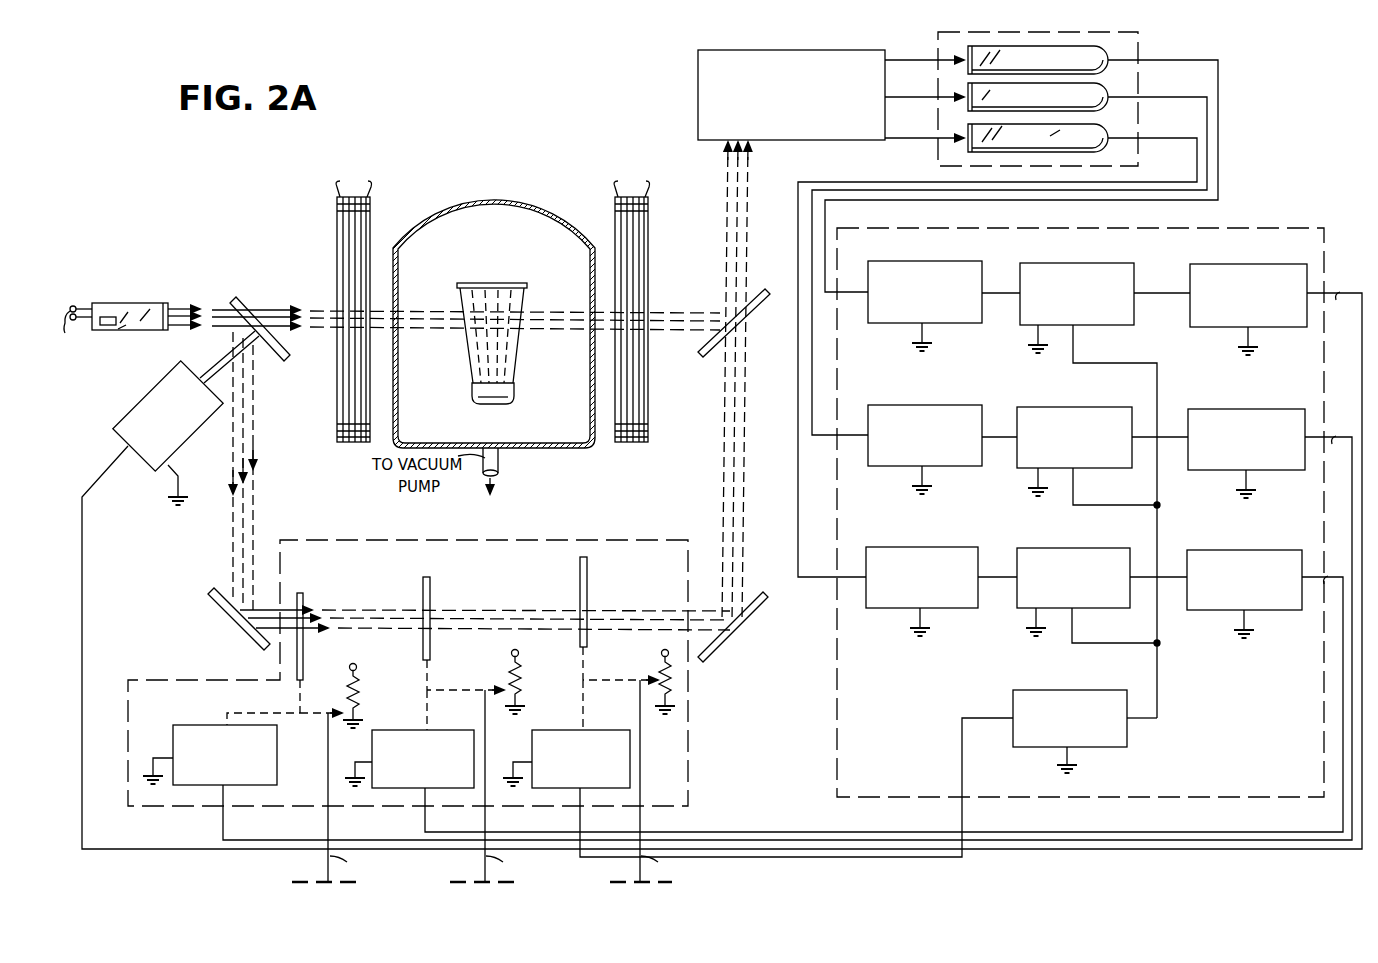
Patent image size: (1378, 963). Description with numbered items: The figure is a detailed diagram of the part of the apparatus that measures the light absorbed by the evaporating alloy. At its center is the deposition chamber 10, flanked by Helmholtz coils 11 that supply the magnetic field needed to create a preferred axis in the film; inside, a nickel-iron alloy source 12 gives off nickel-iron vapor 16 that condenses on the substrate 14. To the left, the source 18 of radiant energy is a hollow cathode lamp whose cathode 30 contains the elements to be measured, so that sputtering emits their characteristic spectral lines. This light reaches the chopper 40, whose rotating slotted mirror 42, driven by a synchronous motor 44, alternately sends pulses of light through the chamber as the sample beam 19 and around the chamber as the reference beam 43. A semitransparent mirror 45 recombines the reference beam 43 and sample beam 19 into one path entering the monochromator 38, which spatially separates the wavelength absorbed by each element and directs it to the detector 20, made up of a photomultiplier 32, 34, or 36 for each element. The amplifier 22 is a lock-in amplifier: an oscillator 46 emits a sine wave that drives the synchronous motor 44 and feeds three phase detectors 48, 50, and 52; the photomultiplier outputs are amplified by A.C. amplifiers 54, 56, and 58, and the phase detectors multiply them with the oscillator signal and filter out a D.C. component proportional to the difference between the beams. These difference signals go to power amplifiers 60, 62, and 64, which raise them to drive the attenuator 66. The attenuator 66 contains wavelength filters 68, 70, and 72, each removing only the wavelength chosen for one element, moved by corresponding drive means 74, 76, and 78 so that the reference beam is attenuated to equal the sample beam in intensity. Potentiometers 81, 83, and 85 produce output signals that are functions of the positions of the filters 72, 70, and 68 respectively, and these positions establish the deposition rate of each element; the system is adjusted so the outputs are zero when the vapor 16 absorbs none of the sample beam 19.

The deposition chamber 10 is at (492, 204).
The Helmholtz coils 11 is at (337, 239).
The nickel-iron alloy source 12 is at (515, 396).
The substrate 14 is at (495, 282).
The nickel-iron vapor 16 is at (462, 346).
The source of radiant energy 18 is at (149, 301).
The radiant energy beam (sample beam) 19 is at (429, 308).
The detector 20 is at (1064, 95).
The amplifier 22 is at (836, 760).
The cathode 30 is at (114, 327).
The photomultiplier 32 is at (1096, 140).
The photomultiplier 34 is at (1096, 100).
The photomultiplier 36 is at (1096, 66).
The monochromator 38 is at (816, 33).
The chopper 40 is at (181, 401).
The rotating slotted mirror 42 is at (284, 360).
The reference beam 43 is at (250, 530).
The synchronous motor 44 is at (193, 434).
The semitransparent mirror 45 is at (768, 292).
The oscillator 46 is at (1022, 690).
The phase detector 48 is at (1086, 546).
The phase detector 50 is at (1086, 405).
The phase detector 52 is at (1086, 261).
The A.C. amplifier 54 is at (936, 545).
The A.C. amplifier 56 is at (936, 403).
The A.C. amplifier 58 is at (936, 259).
The power amplifier 60 is at (1240, 548).
The power amplifier 62 is at (1240, 407).
The power amplifier 64 is at (1240, 262).
The attenuator 66 is at (544, 540).
The wavelength filter 68 is at (302, 593).
The wavelength filter 70 is at (431, 590).
The wavelength filter 72 is at (587, 589).
The drive means 74 is at (204, 723).
The drive means 76 is at (404, 728).
The drive means 78 is at (564, 728).
The potentiometer 81 is at (658, 678).
The potentiometer 83 is at (521, 683).
The potentiometer 85 is at (360, 680).